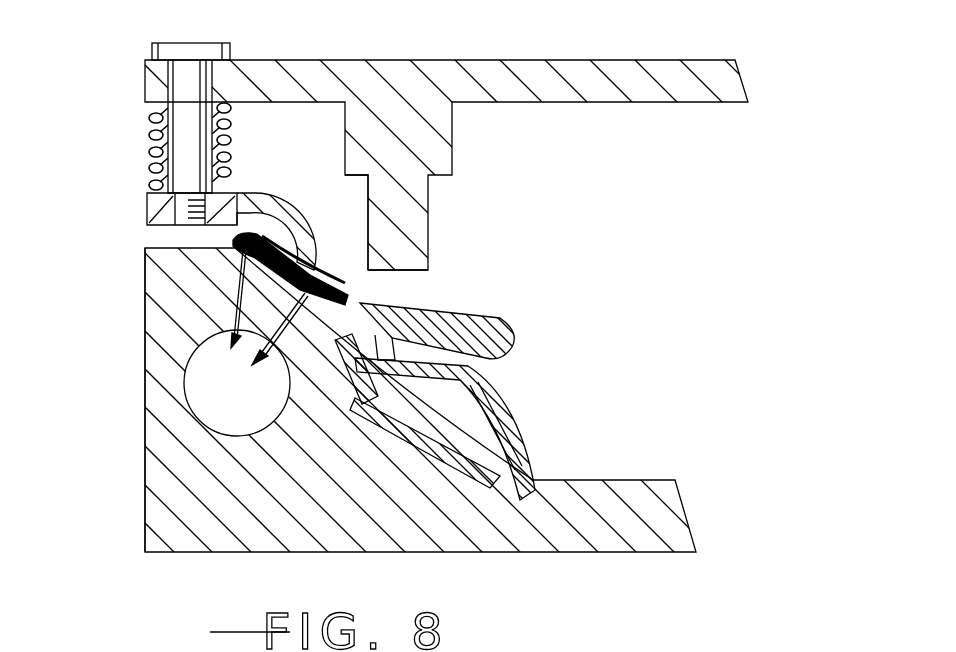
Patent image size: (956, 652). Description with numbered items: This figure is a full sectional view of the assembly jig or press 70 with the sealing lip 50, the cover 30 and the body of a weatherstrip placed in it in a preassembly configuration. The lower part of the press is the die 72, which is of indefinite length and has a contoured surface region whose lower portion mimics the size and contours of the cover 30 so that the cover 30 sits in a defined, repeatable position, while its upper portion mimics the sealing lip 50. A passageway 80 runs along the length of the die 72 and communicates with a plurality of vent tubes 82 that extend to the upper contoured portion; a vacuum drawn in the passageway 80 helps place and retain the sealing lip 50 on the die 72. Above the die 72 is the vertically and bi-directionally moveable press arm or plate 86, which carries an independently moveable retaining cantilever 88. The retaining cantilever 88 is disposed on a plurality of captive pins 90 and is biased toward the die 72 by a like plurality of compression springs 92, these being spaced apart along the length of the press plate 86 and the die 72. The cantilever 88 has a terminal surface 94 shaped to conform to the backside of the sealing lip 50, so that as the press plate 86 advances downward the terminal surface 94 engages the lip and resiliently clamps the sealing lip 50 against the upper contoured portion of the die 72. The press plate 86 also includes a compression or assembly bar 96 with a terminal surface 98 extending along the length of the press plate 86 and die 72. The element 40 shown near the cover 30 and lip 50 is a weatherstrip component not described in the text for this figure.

The cover 30 is at (436, 428).
The insert bar 40 is at (481, 303).
The sealing lip 50 is at (330, 259).
The assembly jig or press 70 is at (620, 298).
The die 72 is at (612, 542).
The passageway 80 is at (255, 421).
The vent tubes 82 is at (250, 303).
The press arm or plate 86 is at (556, 116).
The retaining cantilever 88 is at (245, 205).
The captive pins 90 is at (200, 85).
The compression springs 92 is at (150, 152).
The terminal surface 94 is at (305, 270).
The compression or assembly bar 96 is at (408, 217).
The terminal surface 98 is at (404, 270).